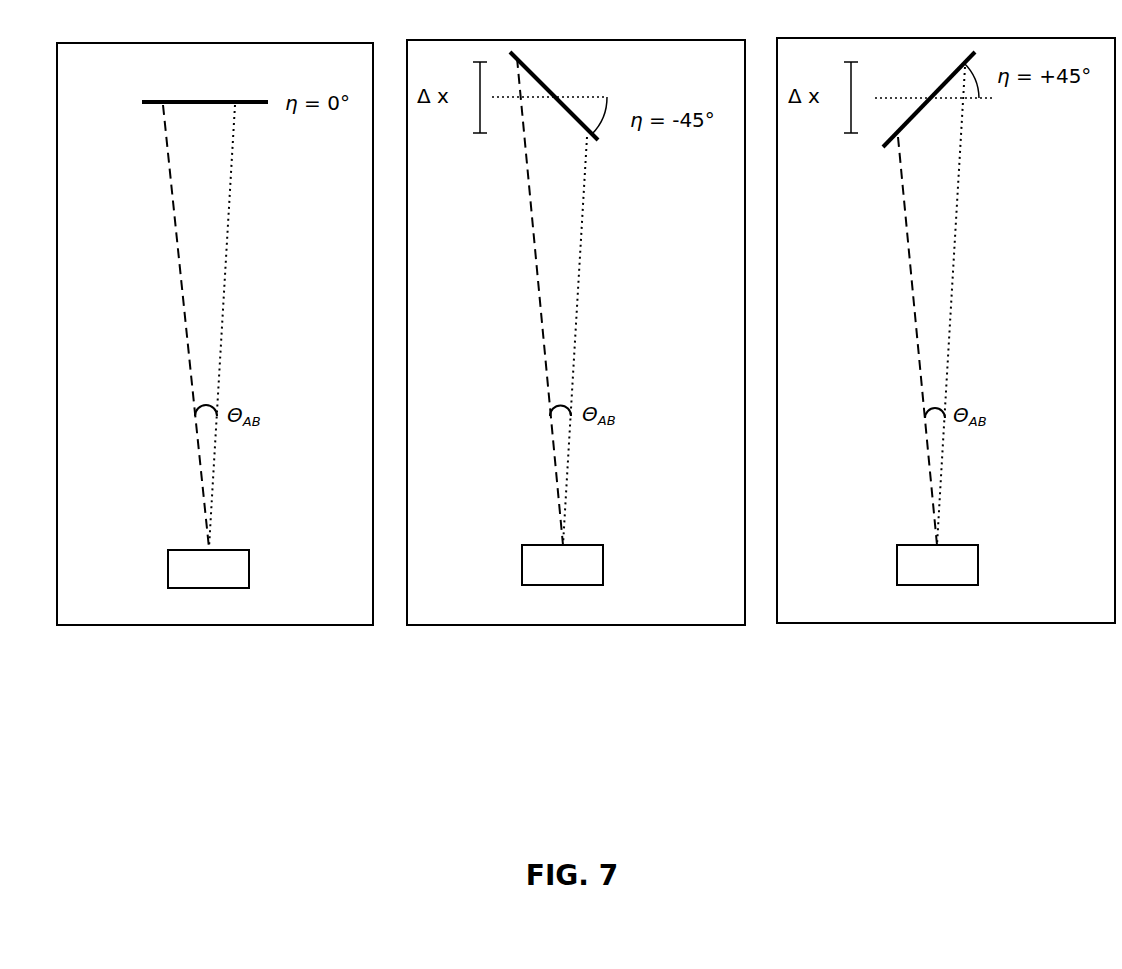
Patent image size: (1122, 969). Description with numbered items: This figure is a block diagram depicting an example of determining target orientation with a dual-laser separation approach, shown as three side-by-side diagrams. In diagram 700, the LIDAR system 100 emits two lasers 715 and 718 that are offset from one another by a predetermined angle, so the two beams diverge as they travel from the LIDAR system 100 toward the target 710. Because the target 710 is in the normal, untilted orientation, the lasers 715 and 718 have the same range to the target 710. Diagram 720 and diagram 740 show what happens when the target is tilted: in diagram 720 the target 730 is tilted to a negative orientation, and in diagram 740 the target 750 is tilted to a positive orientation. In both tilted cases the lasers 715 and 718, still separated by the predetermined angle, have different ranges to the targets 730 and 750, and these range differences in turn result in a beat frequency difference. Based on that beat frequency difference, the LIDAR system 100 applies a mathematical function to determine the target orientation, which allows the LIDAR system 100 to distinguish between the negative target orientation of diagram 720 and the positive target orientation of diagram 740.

The LIDAR system 100 is at (573, 566).
The diagram 700 is at (215, 369).
The target 710 is at (182, 76).
The laser 715 is at (526, 303).
The laser 718 is at (619, 307).
The diagram 720 is at (576, 366).
The target 730 is at (577, 95).
The diagram 740 is at (946, 365).
The target 750 is at (924, 98).